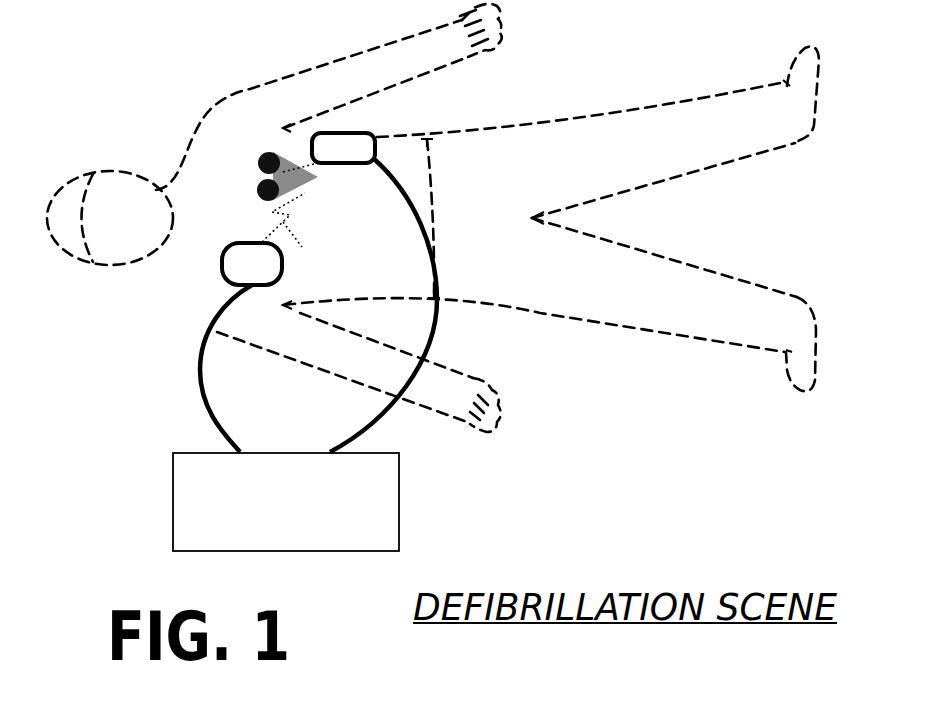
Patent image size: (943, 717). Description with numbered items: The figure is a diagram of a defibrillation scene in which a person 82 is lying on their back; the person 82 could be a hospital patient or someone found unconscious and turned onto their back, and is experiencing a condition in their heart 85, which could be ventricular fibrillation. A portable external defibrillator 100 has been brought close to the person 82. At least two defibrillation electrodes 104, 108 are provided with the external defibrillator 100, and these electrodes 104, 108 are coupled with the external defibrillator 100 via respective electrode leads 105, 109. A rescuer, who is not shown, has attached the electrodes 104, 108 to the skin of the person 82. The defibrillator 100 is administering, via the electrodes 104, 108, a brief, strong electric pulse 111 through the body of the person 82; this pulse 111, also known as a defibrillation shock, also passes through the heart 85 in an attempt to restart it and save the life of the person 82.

The person 82 is at (185, 135).
The heart 85 is at (262, 152).
The external defibrillator 100 is at (266, 481).
The defibrillation electrode 104 is at (219, 272).
The electrode lead 105 is at (197, 381).
The defibrillation electrode 108 is at (356, 123).
The electrode lead 109 is at (356, 431).
The electric pulse 111 is at (304, 229).